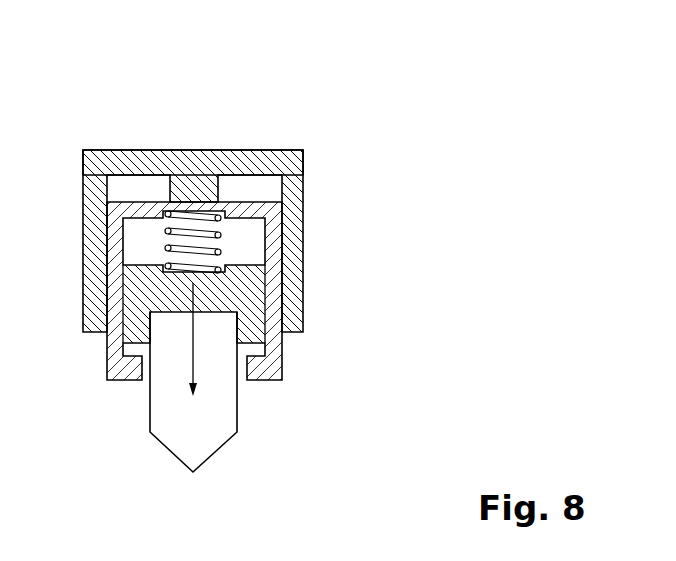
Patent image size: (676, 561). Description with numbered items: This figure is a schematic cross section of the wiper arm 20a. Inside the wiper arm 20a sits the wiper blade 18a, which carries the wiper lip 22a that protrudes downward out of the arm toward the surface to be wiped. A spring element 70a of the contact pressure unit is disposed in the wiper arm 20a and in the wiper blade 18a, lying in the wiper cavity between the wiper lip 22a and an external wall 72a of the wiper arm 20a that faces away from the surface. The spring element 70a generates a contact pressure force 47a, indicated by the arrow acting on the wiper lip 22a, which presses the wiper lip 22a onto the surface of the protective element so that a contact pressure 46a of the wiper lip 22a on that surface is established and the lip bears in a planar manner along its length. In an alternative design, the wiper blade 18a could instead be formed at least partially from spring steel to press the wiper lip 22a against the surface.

The wiper arm 20a is at (293, 168).
The external wall 72a is at (245, 163).
The contact pressure 46a is at (250, 291).
The contact pressure force 47a is at (267, 345).
The spring element 70a is at (221, 236).
The wiper lip 22a is at (217, 430).
The wiper blade 18a is at (130, 403).